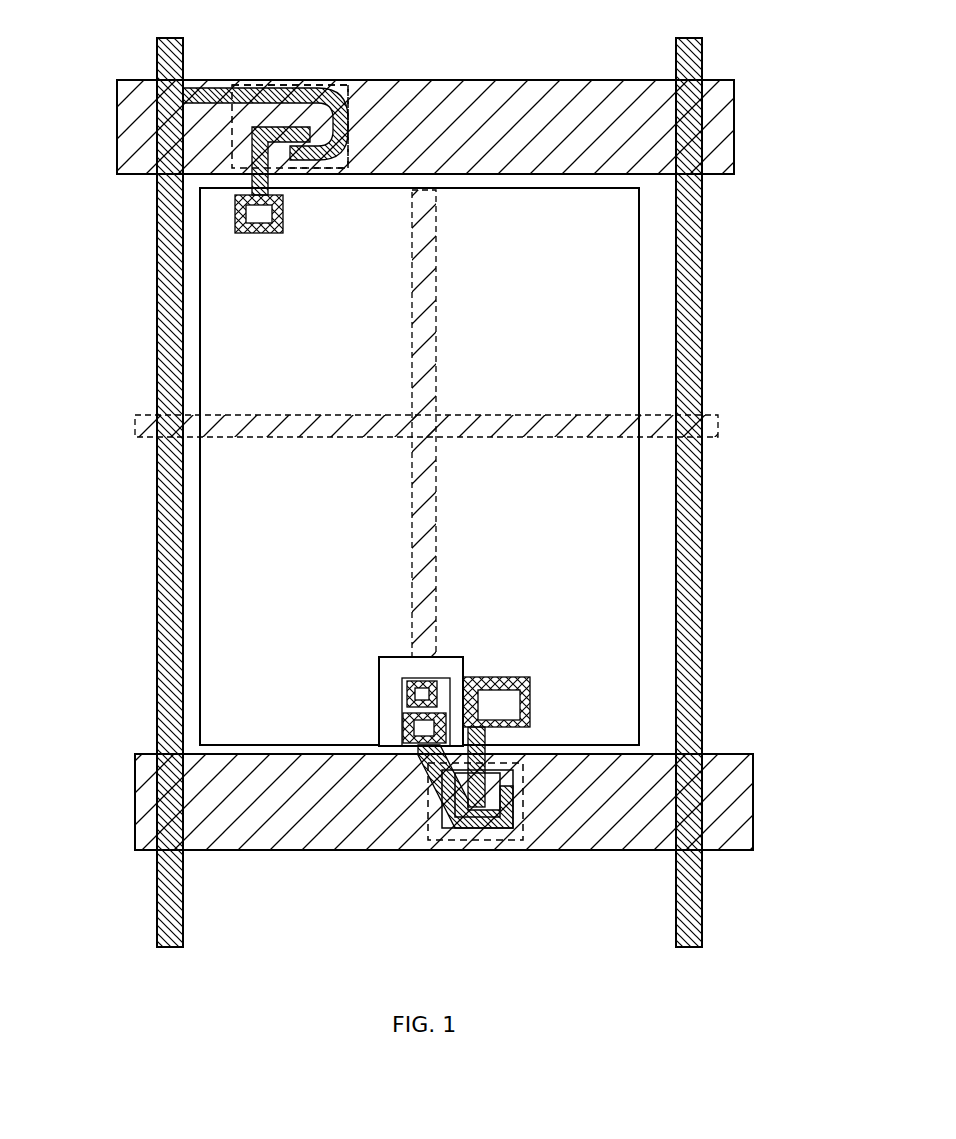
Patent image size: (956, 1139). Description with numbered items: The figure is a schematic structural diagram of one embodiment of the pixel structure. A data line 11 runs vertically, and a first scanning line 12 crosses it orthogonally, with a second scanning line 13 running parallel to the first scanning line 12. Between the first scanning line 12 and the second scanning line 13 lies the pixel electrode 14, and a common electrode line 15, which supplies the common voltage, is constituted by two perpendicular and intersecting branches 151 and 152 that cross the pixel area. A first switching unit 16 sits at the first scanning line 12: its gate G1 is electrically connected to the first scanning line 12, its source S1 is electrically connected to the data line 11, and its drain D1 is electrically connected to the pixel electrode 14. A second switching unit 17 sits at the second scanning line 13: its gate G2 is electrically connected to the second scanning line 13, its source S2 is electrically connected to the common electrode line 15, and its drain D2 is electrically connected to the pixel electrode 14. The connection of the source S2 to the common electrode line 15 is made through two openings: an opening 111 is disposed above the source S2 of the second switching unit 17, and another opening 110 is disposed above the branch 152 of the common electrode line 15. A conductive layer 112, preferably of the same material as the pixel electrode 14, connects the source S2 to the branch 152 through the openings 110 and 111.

The data line 11 is at (157, 596).
The first scanning line 12 is at (483, 80).
The second scanning line 13 is at (275, 848).
The pixel electrode 14 is at (640, 566).
The common electrode line 15 is at (426, 440).
The branch 151 is at (236, 420).
The branch 152 is at (438, 266).
The first switching unit 16 is at (352, 90).
The second switching unit 17 is at (526, 820).
The opening 110 is at (412, 688).
The opening 111 is at (402, 730).
The conductive layer 112 is at (455, 690).
The source S1 is at (263, 88).
The gate G1 is at (333, 88).
The drain D1 is at (292, 170).
The source S2 is at (448, 832).
The gate G2 is at (486, 840).
The drain D2 is at (495, 770).